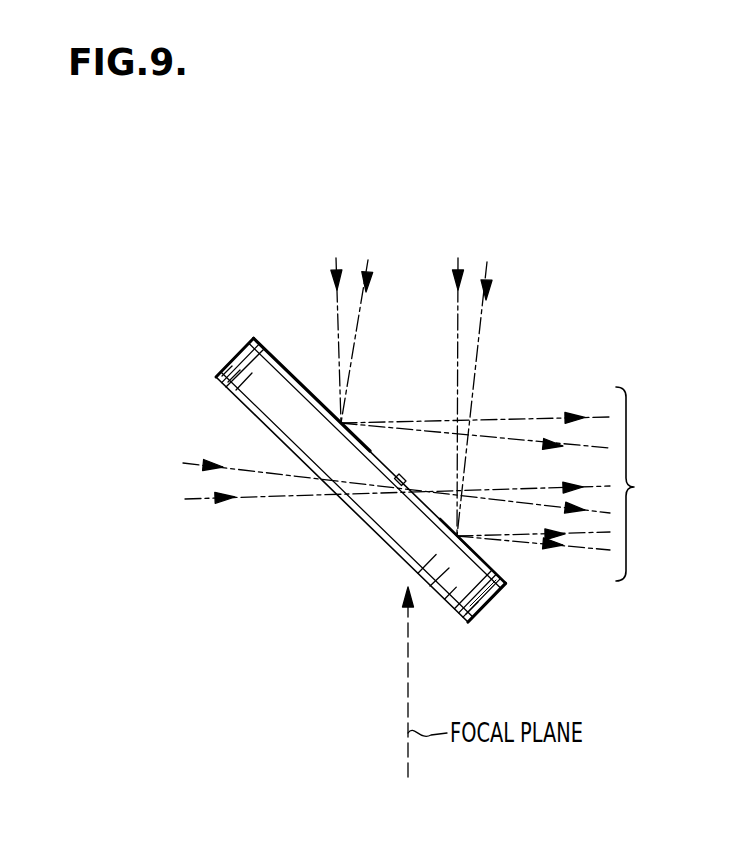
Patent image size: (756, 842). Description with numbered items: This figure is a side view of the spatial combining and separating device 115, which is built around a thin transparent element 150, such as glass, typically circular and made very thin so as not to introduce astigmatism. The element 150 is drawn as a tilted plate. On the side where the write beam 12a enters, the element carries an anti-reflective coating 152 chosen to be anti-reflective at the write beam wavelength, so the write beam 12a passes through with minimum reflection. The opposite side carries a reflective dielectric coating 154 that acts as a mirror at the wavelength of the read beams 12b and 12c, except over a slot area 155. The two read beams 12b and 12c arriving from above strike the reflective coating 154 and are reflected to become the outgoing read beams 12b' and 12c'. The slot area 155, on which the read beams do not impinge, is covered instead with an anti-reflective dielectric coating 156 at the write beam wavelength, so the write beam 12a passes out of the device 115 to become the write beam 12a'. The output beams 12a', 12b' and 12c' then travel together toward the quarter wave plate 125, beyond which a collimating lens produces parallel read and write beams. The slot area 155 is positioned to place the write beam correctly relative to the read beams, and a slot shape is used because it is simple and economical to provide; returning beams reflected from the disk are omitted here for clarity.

The spatial combining and separating device 115 is at (276, 564).
The thin transparent element 150 is at (487, 601).
The anti-reflective coating 152 is at (243, 396).
The reflective dielectric coating 154 is at (278, 356).
The slot area 155 is at (398, 533).
The anti-reflective dielectric coating 156 is at (399, 484).
The write beam 12a is at (337, 504).
The read beam 12b is at (538, 374).
The read beam 12c is at (237, 318).
The write beam 12a' is at (558, 481).
The read beam 12b' is at (533, 569).
The read beam 12c' is at (475, 407).
The quarter wave plate 125 is at (677, 484).